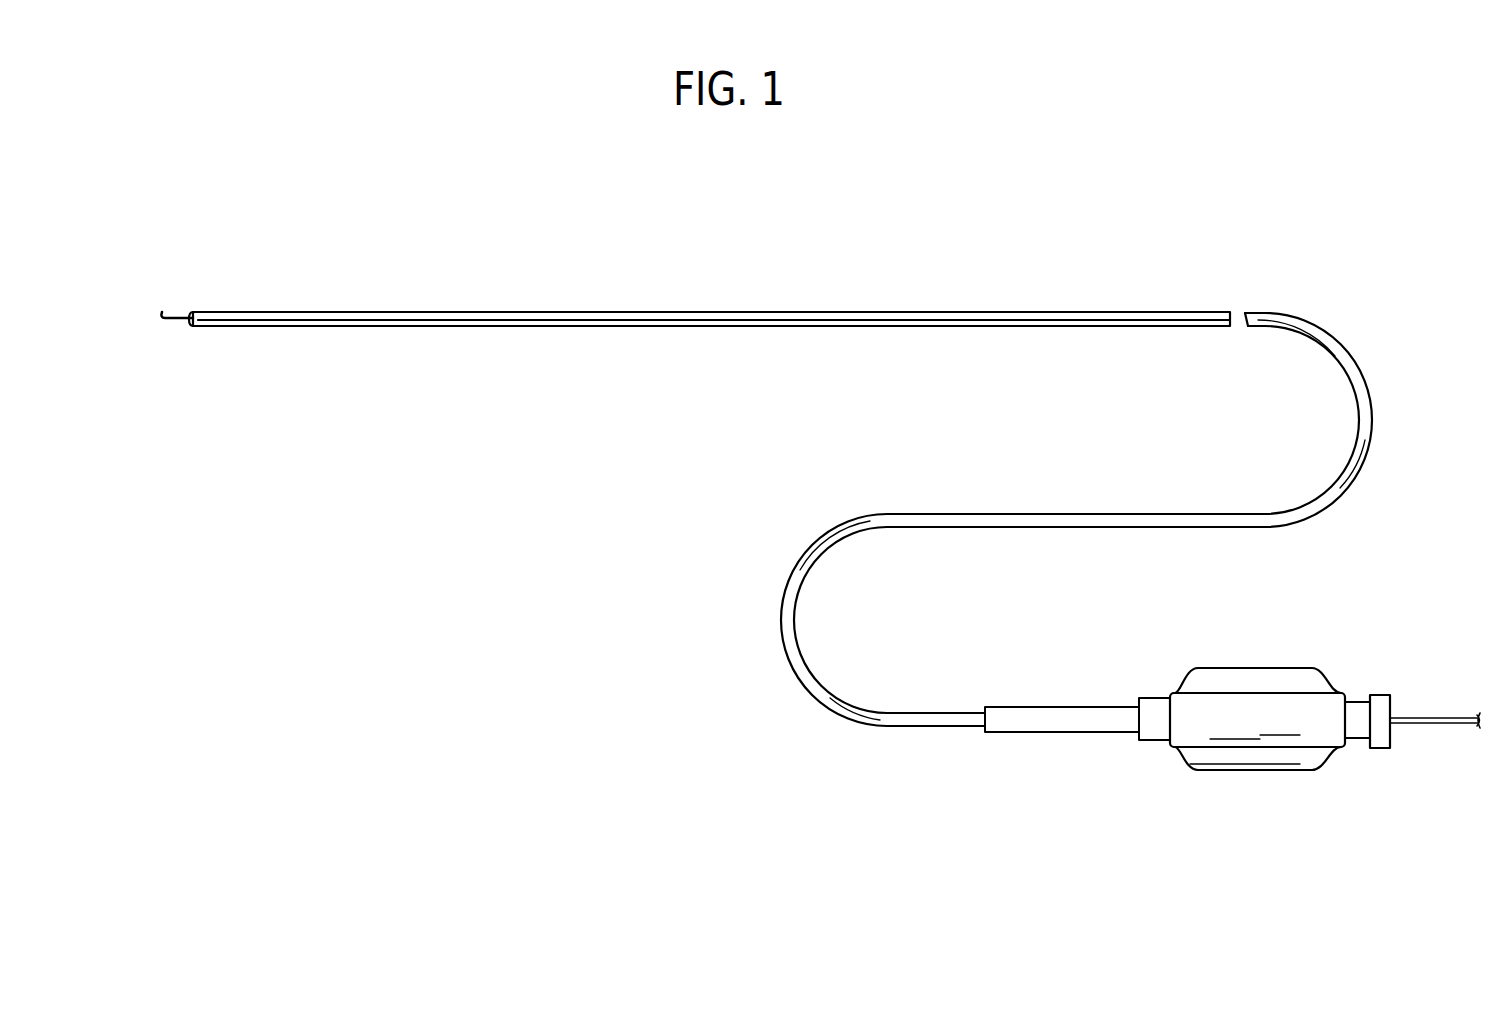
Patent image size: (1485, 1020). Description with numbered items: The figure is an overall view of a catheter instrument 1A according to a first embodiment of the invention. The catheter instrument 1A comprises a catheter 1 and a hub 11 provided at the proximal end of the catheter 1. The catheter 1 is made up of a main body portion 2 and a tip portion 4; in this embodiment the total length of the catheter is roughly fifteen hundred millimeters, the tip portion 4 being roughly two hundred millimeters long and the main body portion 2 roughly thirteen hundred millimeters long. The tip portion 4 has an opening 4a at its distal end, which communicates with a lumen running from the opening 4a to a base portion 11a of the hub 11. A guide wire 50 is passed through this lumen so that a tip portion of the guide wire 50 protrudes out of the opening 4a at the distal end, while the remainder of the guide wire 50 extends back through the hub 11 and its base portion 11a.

The catheter 1 is at (1083, 600).
The catheter instrument 1A is at (476, 597).
The main body portion 2 is at (1000, 288).
The tip portion 4 is at (1292, 288).
The opening 4a is at (190, 328).
The hub 11 is at (1243, 735).
The base portion 11a is at (1392, 730).
The guide wire 50 is at (172, 315).